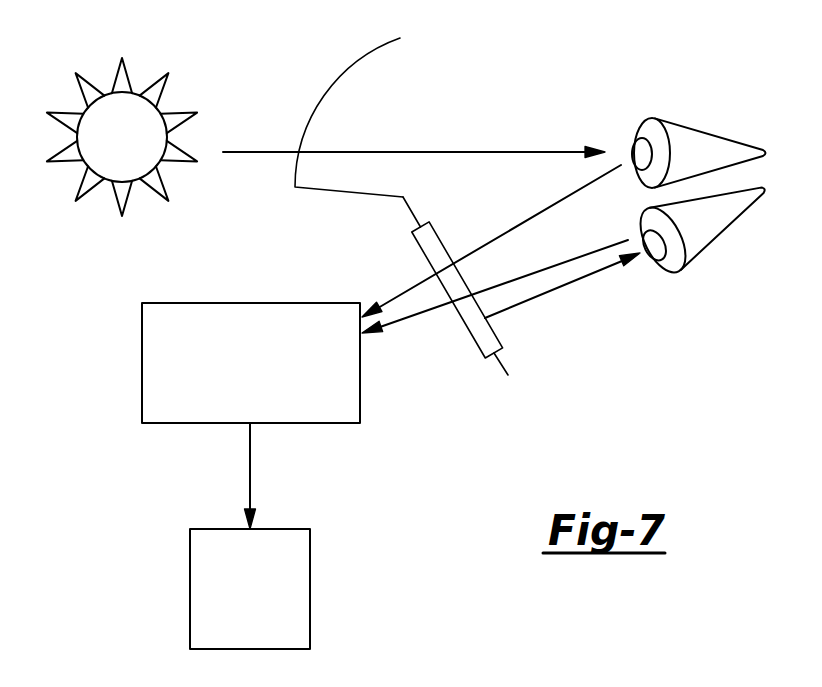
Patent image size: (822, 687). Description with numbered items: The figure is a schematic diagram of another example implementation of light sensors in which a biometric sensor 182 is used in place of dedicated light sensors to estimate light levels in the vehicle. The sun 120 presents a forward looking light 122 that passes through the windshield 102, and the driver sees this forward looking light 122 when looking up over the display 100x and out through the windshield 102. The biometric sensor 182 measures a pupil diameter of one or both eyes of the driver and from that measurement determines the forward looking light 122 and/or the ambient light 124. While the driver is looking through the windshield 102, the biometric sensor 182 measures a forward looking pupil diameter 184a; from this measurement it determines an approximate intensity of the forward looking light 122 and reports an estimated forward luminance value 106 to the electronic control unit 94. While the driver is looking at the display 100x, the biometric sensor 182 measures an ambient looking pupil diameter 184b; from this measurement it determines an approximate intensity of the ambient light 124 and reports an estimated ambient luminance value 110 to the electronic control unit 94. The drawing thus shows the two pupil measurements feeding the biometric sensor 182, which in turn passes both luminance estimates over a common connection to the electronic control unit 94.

The sun 120 is at (106, 91).
The windshield 102 is at (377, 50).
The forward looking light 122 is at (447, 151).
The display 100x is at (471, 336).
The ambient light 124 is at (540, 297).
The forward looking pupil diameter 184a is at (632, 151).
The ambient looking pupil diameter 184b is at (648, 256).
The biometric sensor 182 is at (213, 303).
The estimated forward luminance value 106 is at (190, 476).
The estimated ambient luminance value 110 is at (247, 465).
The electronic control unit 94 is at (282, 530).